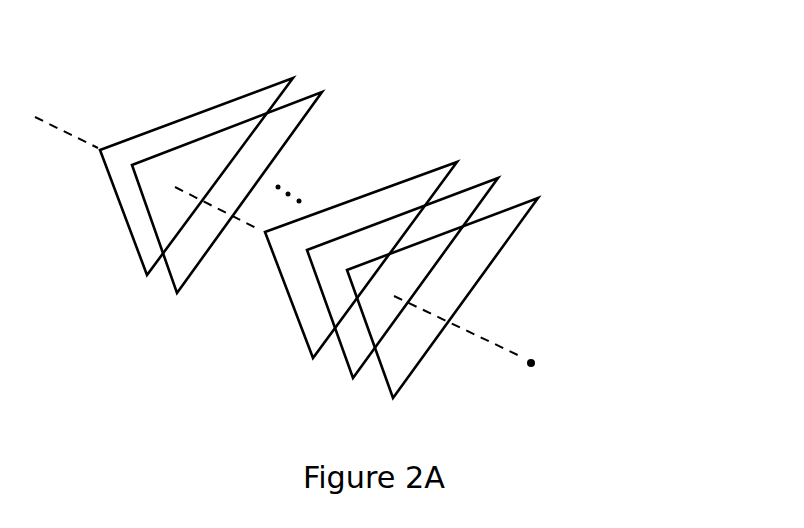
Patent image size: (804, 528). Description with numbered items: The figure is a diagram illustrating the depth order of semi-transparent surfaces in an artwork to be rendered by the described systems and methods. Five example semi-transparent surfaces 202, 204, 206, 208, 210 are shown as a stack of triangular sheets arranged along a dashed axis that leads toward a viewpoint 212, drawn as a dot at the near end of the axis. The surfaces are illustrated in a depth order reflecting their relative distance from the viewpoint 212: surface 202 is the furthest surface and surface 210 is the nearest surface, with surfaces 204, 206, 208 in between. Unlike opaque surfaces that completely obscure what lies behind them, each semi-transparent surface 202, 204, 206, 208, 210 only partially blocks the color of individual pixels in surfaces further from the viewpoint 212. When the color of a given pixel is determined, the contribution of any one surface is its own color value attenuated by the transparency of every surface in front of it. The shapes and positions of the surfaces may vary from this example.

The semi-transparent surface 202 is at (293, 76).
The semi-transparent surface 204 is at (322, 91).
The semi-transparent surface 206 is at (458, 160).
The semi-transparent surface 208 is at (498, 177).
The semi-transparent surface 210 is at (538, 197).
The viewpoint 212 is at (532, 357).